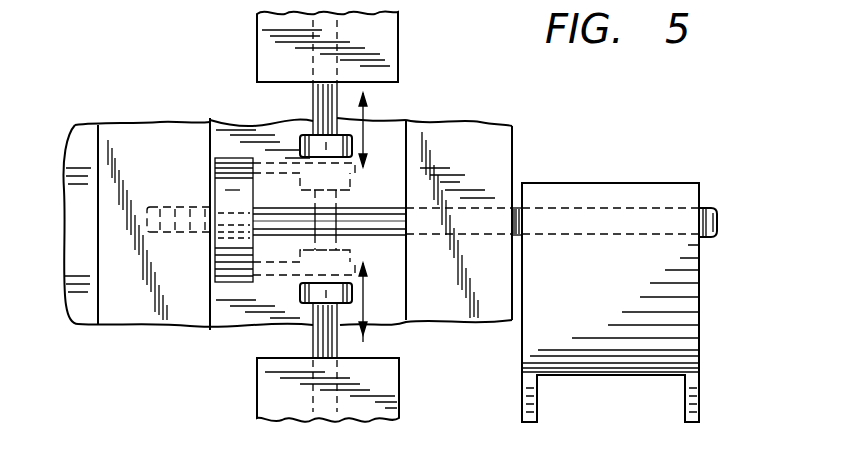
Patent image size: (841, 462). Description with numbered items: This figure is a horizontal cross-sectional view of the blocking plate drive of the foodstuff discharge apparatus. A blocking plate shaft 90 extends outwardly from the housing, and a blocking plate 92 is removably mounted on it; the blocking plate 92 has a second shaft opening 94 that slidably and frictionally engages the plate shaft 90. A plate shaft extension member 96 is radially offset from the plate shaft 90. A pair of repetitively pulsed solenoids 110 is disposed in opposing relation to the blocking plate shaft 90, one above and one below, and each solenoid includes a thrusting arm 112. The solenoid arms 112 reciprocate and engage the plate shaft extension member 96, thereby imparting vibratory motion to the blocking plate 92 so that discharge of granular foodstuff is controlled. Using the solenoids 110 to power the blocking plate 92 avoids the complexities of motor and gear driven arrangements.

The blocking plate shaft 90 is at (717, 220).
The blocking plate 92 is at (697, 297).
The second shaft opening 94 is at (616, 206).
The plate shaft extension member 96 is at (355, 230).
The repetitively pulsed solenoids 110 is at (385, 52).
The thrusting arms 112 is at (313, 102).